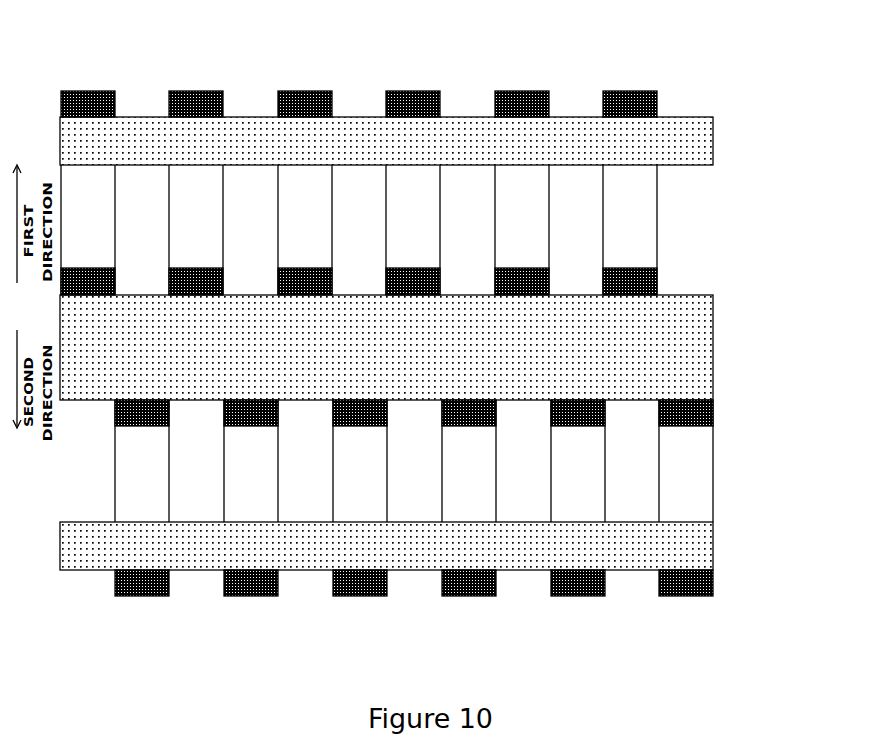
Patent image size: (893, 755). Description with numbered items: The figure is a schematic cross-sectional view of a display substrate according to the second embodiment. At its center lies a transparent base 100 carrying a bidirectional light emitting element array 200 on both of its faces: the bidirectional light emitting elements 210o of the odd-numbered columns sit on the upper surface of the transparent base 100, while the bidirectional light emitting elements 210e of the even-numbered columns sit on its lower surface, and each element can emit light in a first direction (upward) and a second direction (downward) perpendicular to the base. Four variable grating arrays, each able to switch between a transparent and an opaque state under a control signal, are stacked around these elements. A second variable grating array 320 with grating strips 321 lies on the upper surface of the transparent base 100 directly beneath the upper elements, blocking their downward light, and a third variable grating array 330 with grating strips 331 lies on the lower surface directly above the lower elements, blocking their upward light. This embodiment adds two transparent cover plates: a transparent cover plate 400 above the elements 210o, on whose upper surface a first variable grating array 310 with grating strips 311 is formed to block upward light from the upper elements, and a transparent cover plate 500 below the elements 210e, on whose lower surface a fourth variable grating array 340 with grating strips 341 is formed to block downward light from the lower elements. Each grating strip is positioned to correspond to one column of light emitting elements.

The transparent base 100 is at (729, 295).
The bidirectional light emitting element array 200 is at (729, 165).
The bidirectional light emitting element in odd-numbered column 210o is at (618, 222).
The bidirectional light emitting element in even-numbered column 210e is at (700, 467).
The first variable grating array 310 is at (729, 90).
The grating strip of first variable grating array 311 is at (617, 92).
The second variable grating array 320 is at (729, 268).
The grating strip of second variable grating array 321 is at (658, 268).
The third variable grating array 330 is at (729, 400).
The grating strip of third variable grating array 331 is at (115, 422).
The fourth variable grating array 340 is at (729, 570).
The grating strip of fourth variable grating array 341 is at (140, 597).
The transparent cover plate 400 is at (729, 118).
The transparent cover plate 500 is at (729, 522).